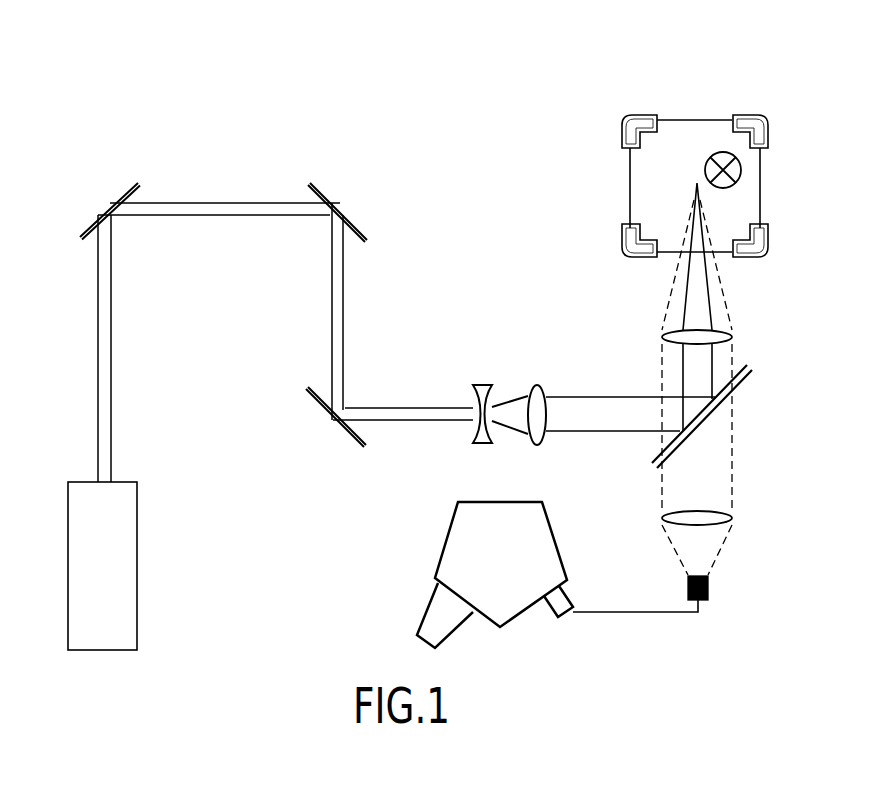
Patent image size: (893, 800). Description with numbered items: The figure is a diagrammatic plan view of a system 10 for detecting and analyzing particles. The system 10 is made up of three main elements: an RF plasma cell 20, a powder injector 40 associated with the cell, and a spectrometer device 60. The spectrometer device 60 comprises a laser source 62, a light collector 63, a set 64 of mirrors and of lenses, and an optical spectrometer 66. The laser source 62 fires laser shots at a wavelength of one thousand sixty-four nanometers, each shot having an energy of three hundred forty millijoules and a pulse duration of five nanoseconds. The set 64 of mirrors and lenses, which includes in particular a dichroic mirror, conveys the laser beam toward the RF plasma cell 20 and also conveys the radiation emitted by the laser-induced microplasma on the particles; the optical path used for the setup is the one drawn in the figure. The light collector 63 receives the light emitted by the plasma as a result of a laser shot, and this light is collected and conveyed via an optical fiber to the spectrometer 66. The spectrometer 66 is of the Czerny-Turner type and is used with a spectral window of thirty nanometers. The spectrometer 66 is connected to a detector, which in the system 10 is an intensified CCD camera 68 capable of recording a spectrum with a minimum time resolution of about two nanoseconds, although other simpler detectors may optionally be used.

The system 10 is at (448, 73).
The RF plasma cell 20 is at (697, 119).
The powder injector 40 is at (743, 172).
The spectrometer device 60 is at (288, 645).
The laser source 62 is at (90, 577).
The light collector 63 is at (737, 545).
The set of mirrors and lenses 64 is at (368, 238).
The optical spectrometer 66 is at (513, 562).
The intensified CCD camera 68 is at (430, 607).